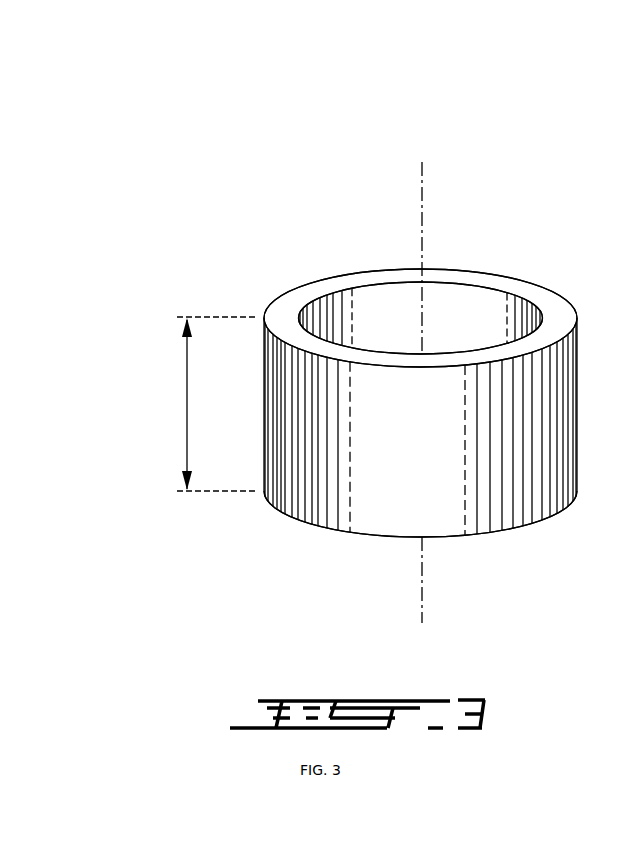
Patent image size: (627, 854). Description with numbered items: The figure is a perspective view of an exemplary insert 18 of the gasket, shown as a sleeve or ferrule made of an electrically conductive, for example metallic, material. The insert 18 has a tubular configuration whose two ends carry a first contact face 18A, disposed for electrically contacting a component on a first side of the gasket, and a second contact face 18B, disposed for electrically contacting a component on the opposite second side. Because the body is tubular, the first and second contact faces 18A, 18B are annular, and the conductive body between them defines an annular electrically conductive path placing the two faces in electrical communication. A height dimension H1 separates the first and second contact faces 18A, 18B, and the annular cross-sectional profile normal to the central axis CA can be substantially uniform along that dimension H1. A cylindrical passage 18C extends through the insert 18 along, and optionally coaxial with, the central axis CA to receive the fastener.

The insert 18 is at (377, 178).
The first contact face 18A is at (284, 318).
The second contact face 18B is at (308, 527).
The passage 18C is at (360, 312).
The central axis CA is at (424, 191).
The dimension H1 is at (214, 404).